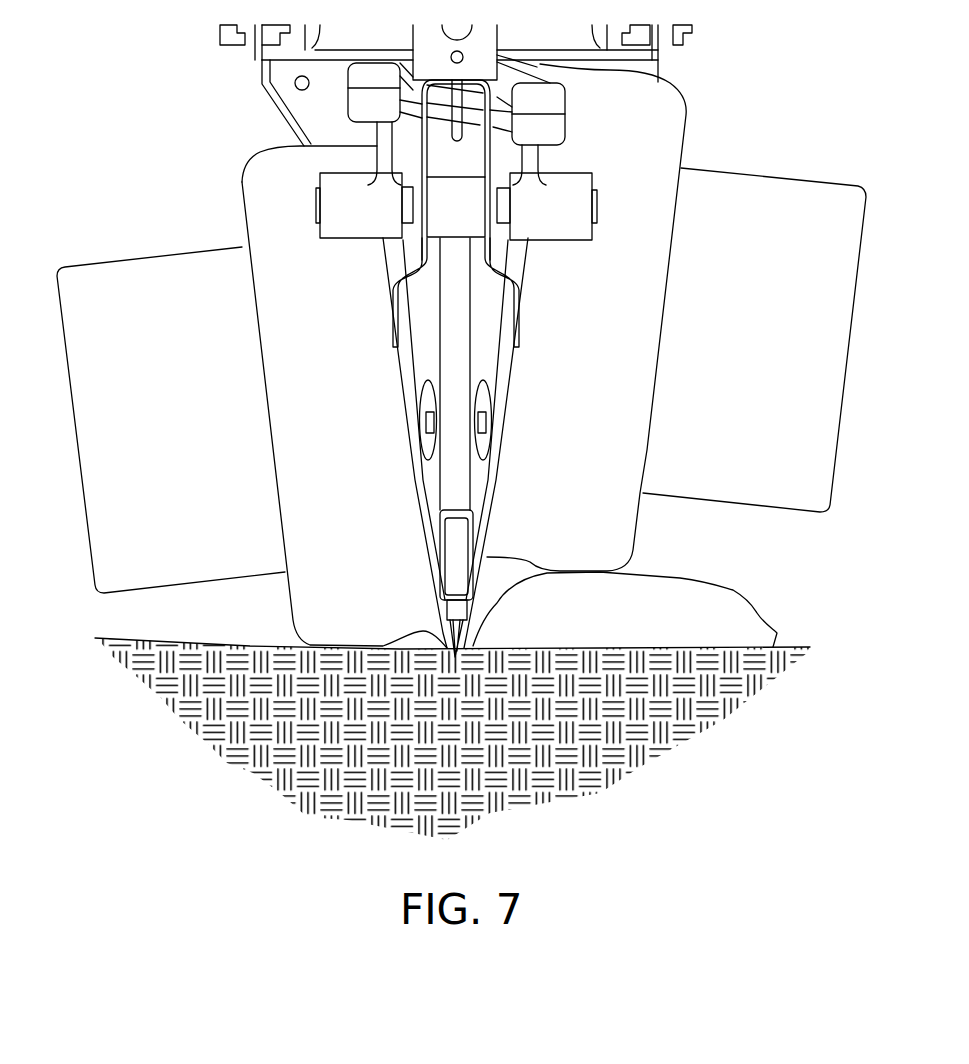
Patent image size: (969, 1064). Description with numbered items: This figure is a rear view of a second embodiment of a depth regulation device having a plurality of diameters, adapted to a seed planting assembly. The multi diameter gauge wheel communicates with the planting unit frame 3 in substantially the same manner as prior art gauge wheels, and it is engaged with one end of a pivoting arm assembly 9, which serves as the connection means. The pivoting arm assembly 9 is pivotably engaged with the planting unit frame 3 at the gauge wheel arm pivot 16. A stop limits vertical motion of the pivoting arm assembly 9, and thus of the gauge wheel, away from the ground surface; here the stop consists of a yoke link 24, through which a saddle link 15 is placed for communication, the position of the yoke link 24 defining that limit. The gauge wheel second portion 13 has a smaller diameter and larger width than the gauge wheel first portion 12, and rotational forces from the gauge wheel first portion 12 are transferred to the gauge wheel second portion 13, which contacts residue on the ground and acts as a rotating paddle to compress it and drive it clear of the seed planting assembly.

The planting unit frame 3 is at (258, 68).
The pivoting arm assembly 9 is at (340, 190).
The gauge wheel first portion 12 is at (270, 373).
The gauge wheel second portion 13 is at (178, 270).
The saddle link 15 is at (503, 100).
The gauge wheel arm pivot 16 is at (316, 205).
The yoke link 24 is at (457, 146).